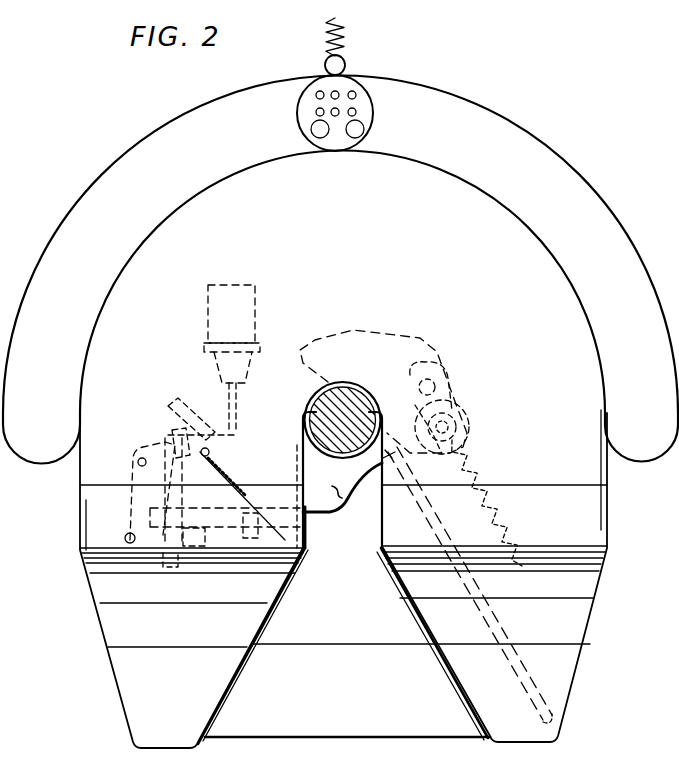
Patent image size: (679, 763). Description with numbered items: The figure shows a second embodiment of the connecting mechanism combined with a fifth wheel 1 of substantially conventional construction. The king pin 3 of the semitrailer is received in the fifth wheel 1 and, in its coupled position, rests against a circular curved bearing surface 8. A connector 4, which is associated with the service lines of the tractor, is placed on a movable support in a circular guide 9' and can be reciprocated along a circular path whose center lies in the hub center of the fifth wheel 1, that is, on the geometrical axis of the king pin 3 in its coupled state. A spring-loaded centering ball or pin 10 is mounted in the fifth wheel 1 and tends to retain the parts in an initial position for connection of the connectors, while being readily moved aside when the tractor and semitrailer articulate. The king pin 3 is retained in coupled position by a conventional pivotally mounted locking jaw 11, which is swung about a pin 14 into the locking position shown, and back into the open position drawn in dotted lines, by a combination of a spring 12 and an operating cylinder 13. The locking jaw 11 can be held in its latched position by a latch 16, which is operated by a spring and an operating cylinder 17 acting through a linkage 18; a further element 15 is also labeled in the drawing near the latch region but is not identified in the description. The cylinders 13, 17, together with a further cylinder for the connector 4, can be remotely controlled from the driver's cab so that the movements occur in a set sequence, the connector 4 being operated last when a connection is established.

The fifth wheel 1 is at (616, 511).
The king pin 3 is at (314, 419).
The connector 4 is at (372, 113).
The bearing surface 8 is at (312, 396).
The circular guide 9' is at (340, 270).
The centering ball or pin 10 is at (346, 66).
The locking jaw 11 is at (346, 502).
The spring 12 is at (499, 508).
The operating cylinder 13 is at (550, 686).
The pin 14 is at (439, 456).
The throat slot 15 is at (304, 546).
The latch 16 is at (257, 472).
The operating cylinder 17 is at (242, 299).
The linkage 18 is at (215, 428).